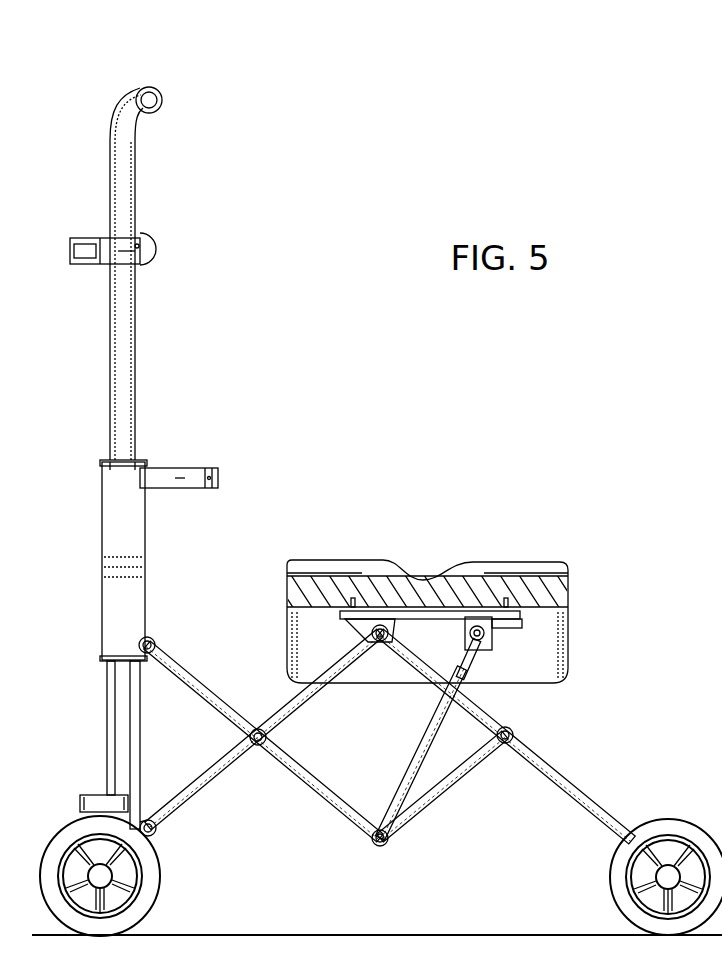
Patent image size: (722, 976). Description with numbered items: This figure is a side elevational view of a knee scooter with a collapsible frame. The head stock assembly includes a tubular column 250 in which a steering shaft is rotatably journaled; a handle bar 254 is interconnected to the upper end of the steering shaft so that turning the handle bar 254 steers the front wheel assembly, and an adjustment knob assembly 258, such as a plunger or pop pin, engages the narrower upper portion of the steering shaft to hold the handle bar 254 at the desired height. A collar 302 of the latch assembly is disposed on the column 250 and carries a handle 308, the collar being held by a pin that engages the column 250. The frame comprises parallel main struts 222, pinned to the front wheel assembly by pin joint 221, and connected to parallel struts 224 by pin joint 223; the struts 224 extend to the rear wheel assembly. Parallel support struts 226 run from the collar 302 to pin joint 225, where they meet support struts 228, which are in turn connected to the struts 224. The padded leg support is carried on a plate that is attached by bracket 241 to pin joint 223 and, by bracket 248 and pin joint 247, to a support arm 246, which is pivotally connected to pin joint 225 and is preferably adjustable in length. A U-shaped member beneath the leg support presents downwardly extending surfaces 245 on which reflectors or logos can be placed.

The tubular column 250 is at (118, 408).
The handle bar 254 is at (158, 94).
The adjustment knob assembly 258 is at (154, 232).
The collar 302 is at (120, 528).
The handle 308 is at (215, 478).
The support struts 226 is at (195, 677).
The main struts 222 is at (228, 775).
The parallel struts 224 is at (565, 777).
The support struts 228 is at (462, 780).
The support arm 246 is at (412, 780).
The pin joint 223 is at (380, 643).
The pin joint 225 is at (383, 847).
The pin joint 221 is at (160, 835).
The bracket 241 is at (347, 620).
The downwardly extending surfaces 245 is at (295, 661).
The pin joint 247 is at (490, 640).
The bracket 248 is at (527, 619).